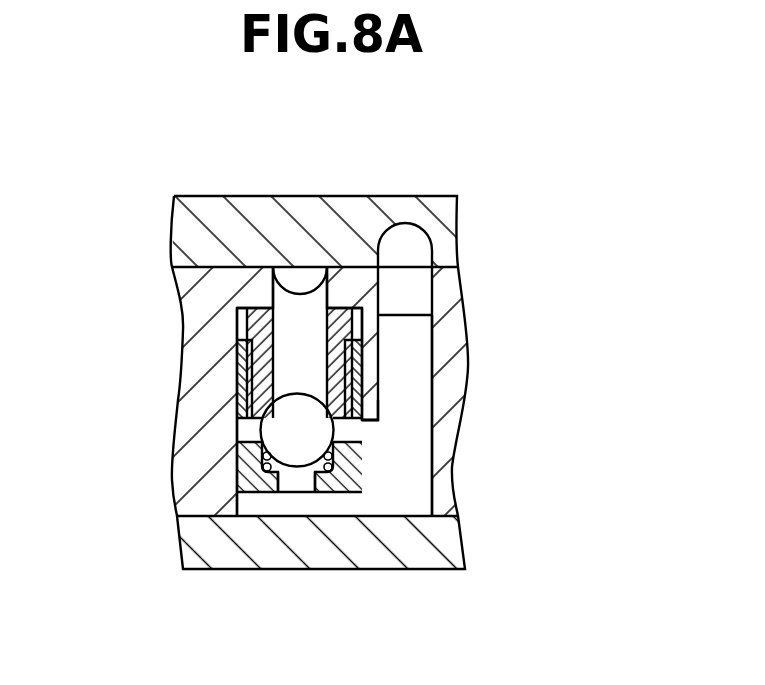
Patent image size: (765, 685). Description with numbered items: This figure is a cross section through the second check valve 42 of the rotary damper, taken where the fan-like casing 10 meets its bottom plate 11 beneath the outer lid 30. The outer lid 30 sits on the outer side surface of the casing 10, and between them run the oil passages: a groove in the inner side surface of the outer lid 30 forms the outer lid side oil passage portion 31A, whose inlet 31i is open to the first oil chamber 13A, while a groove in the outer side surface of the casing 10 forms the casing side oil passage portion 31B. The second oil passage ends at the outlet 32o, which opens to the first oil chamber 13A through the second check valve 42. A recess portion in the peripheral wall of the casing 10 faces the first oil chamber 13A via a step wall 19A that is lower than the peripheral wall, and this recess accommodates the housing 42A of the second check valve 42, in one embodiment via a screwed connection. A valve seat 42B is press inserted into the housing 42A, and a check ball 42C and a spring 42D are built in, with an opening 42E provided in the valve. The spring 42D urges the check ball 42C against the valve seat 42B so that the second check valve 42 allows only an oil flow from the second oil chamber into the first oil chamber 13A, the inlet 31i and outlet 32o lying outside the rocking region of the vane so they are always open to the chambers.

The outer lid 30 is at (198, 212).
The casing side oil passage portion 31B is at (320, 278).
The outlet 32o is at (278, 298).
The casing 10 is at (195, 297).
The check ball 42C is at (292, 415).
The second check valve 42 is at (232, 465).
The bottom plate 11 is at (207, 542).
The outer lid side oil passage portion 31A is at (417, 242).
The inlet 31i is at (412, 287).
The valve seat 42B is at (335, 370).
The step wall 19A is at (372, 410).
The spring 42D is at (330, 443).
The first oil chamber 13A is at (403, 485).
The opening 42E is at (288, 492).
The housing 42A is at (342, 492).